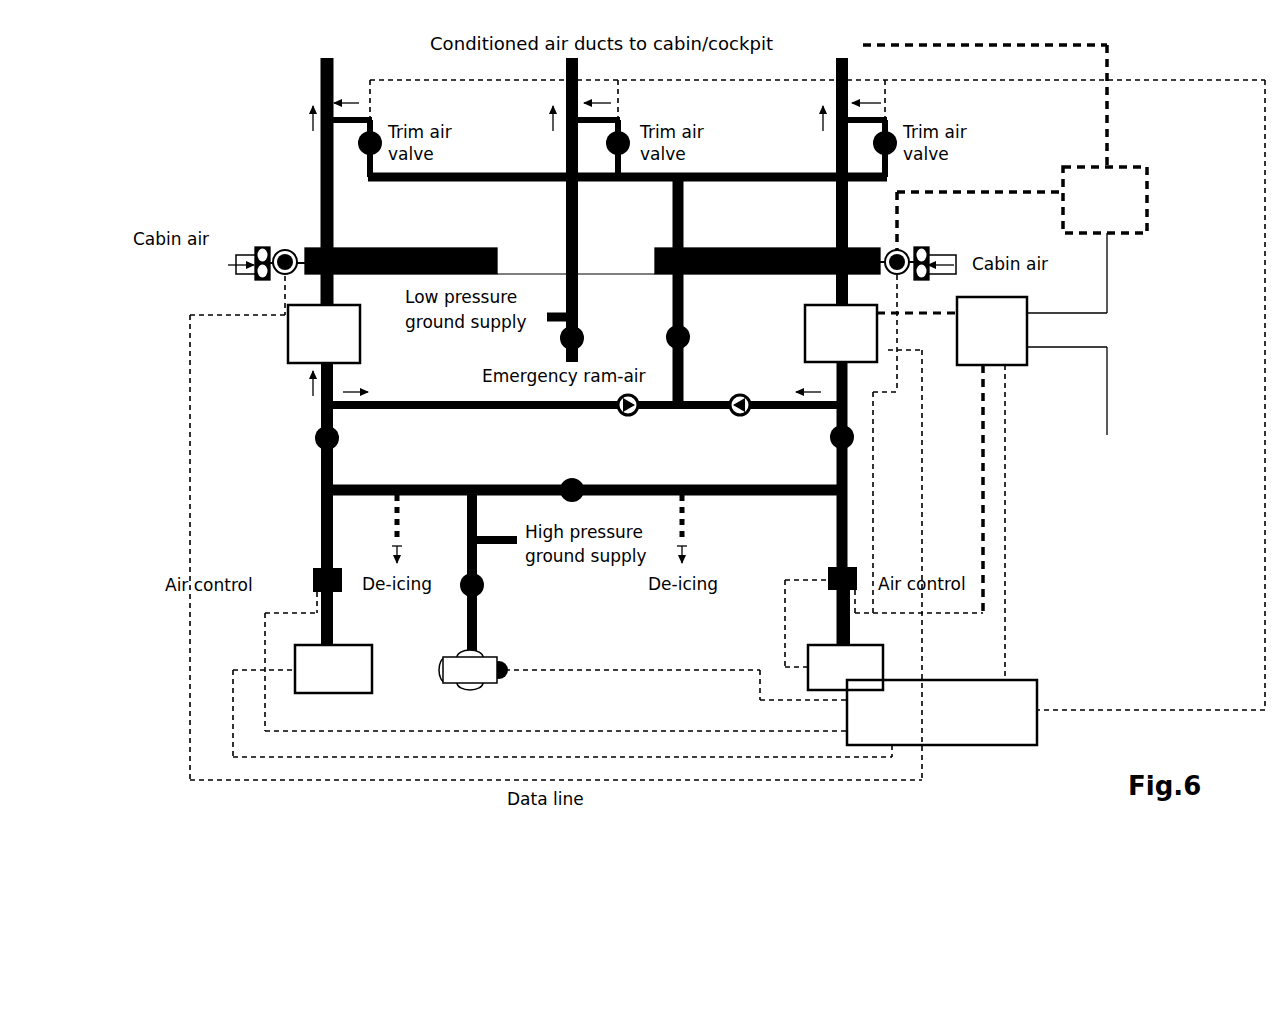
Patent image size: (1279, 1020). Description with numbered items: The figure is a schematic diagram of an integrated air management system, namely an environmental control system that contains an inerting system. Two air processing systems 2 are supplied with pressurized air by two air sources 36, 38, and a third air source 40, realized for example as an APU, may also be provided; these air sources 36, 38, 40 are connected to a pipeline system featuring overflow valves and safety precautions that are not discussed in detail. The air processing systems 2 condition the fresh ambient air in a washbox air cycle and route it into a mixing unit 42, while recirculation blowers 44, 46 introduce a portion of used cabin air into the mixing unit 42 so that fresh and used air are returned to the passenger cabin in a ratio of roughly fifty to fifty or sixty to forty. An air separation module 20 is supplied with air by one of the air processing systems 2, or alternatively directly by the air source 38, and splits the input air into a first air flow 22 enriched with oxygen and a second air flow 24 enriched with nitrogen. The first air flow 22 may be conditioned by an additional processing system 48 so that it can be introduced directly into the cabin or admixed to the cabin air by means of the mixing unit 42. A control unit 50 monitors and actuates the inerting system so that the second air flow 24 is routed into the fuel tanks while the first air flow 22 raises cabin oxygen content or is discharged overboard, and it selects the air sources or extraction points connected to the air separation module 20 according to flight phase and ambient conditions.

The air processing system 2 is at (288, 337).
The air separation module 20 is at (1027, 363).
The first air flow 22 is at (1108, 287).
The second air flow 24 is at (1108, 368).
The air source 36 is at (368, 687).
The air source 38 is at (832, 652).
The third air source 40 is at (478, 685).
The mixing unit 42 is at (373, 249).
The recirculation blower 44 is at (288, 250).
The recirculation blower 46 is at (889, 252).
The processing system 48 is at (1077, 172).
The control unit 50 is at (977, 733).